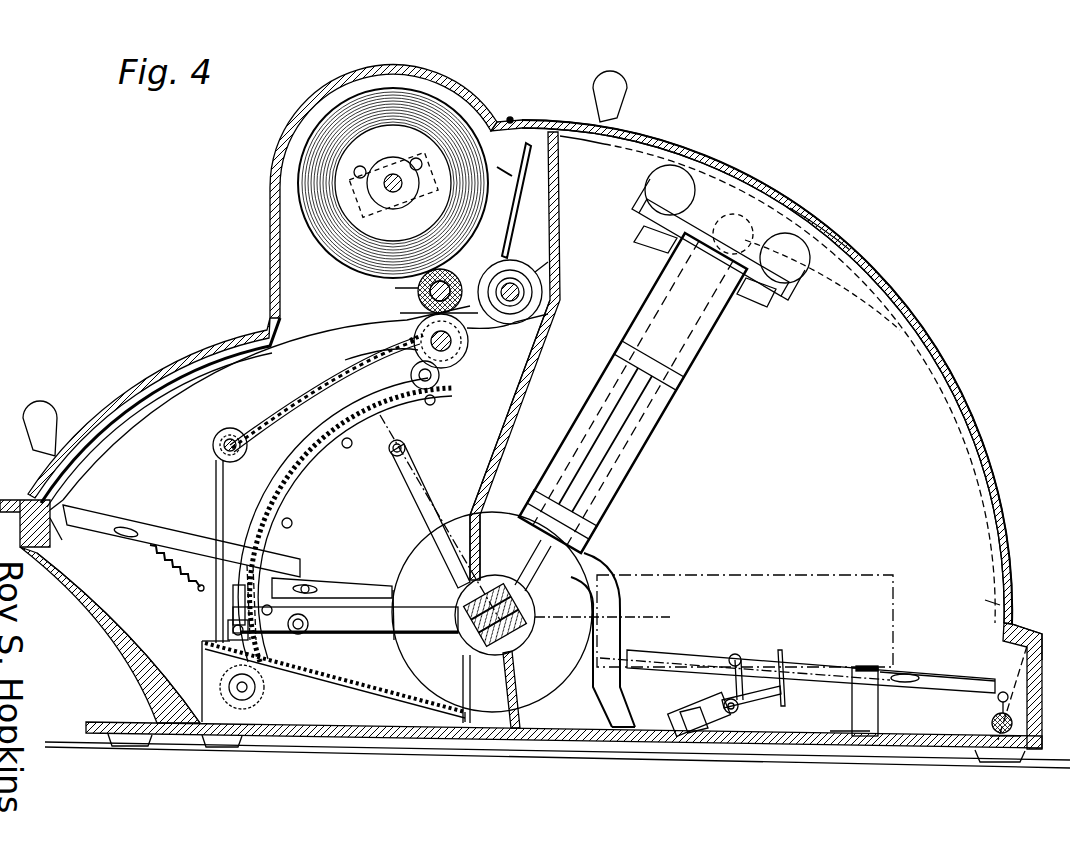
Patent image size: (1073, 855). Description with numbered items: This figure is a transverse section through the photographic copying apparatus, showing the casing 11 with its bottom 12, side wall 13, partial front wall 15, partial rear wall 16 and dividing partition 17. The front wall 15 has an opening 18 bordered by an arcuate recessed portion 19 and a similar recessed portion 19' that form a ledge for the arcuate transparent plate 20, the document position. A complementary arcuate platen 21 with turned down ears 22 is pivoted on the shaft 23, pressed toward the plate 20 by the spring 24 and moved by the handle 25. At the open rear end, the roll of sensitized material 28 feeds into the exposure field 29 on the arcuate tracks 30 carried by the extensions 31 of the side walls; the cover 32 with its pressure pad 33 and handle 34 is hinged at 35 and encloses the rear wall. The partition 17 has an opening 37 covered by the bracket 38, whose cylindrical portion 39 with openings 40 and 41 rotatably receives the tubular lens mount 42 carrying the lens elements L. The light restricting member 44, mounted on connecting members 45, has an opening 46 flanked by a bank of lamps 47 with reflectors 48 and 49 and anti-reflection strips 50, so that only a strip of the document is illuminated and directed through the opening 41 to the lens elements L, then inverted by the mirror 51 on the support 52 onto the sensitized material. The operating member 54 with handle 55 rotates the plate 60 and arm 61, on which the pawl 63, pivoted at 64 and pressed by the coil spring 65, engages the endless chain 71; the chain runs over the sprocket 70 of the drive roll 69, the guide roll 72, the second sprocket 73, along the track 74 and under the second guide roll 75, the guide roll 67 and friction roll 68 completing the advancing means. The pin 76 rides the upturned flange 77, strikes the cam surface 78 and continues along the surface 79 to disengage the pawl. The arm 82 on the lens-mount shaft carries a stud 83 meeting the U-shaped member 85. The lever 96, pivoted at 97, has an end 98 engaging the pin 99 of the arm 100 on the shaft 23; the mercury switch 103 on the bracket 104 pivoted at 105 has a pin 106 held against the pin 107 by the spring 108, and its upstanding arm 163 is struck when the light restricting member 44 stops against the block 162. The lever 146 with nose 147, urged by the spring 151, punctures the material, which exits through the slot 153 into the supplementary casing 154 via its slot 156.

The casing 11 is at (632, 742).
The bottom 12 is at (852, 742).
The side wall 13 is at (524, 356).
The partial front wall 15 is at (1036, 755).
The partial rear wall 16 is at (125, 660).
The dividing partition 17 is at (508, 412).
The opening 18 is at (888, 310).
The arcuate recessed portion 19 is at (799, 383).
The recessed portion 19' is at (780, 376).
The arcuate transparent plate 20 is at (995, 478).
The arcuate platen 21 is at (955, 382).
The turned down ears 22 is at (1022, 634).
The shaft 23 is at (992, 722).
The spring 24 is at (995, 733).
The handle 25 is at (620, 80).
The roll of sensitized material 28 is at (302, 150).
The exposure field 29 is at (192, 365).
The arcuate tracks 30 is at (310, 338).
The extensions 31 is at (114, 485).
The cover 32 is at (118, 410).
The pressure pad 33 is at (165, 415).
The handle 34 is at (40, 410).
The hinge 35 is at (510, 118).
The opening 37 is at (462, 705).
The bracket 38 is at (468, 568).
The cylindrical portion 39 is at (520, 652).
The opening 40 is at (540, 602).
The opening 41 is at (500, 655).
The tubular lens mount 42 is at (535, 585).
The light restricting member 44 is at (655, 425).
The connecting members 45 is at (630, 490).
The opening 46 is at (760, 225).
The bank of lamps 47 is at (700, 165).
The reflector 48 is at (672, 165).
The reflector 49 is at (800, 218).
The anti-reflection strips 50 is at (655, 245).
The mirror 51 is at (330, 672).
The support 52 is at (333, 681).
The operating member 54 is at (700, 365).
The handle 55 is at (745, 215).
The plate 60 is at (430, 540).
The arm 61 is at (396, 590).
The pawl 63 is at (232, 600).
The pivot 64 is at (205, 645).
The coil spring 65 is at (228, 623).
The guide roll 67 is at (540, 290).
The friction roll 68 is at (416, 292).
The drive roll 69 is at (468, 348).
The sprocket 70 is at (412, 338).
The endless chain 71 is at (310, 398).
The guide roll 72 is at (240, 458).
The second sprocket 73 is at (245, 740).
The track 74 is at (296, 498).
The second guide roll 75 is at (411, 374).
The pin 76 is at (248, 565).
The upturned flange 77 is at (266, 502).
The cam surface 78 is at (350, 385).
The surface 79 is at (358, 378).
The arm 82 is at (437, 485).
The stud 83 is at (302, 632).
The U-shaped member 85 is at (348, 598).
The lever 96 is at (675, 652).
The pivot 97 is at (830, 672).
The end of lever 98 is at (960, 678).
The pin 99 is at (1000, 695).
The arm 100 is at (1003, 735).
The mercury switch 103 is at (685, 725).
The bracket 104 is at (760, 700).
The pivot 105 is at (731, 715).
The pin 106 is at (745, 665).
The pin 107 is at (732, 655).
The spring 108 is at (705, 730).
The lever 146 is at (308, 585).
The nose 147 is at (70, 512).
The spring 151 is at (178, 566).
The slot 153 is at (50, 530).
The supplementary casing 154 is at (100, 640).
The slot 156 is at (28, 497).
The block 162 is at (878, 710).
The upstanding arm 163 is at (785, 655).
The lens elements L is at (470, 660).